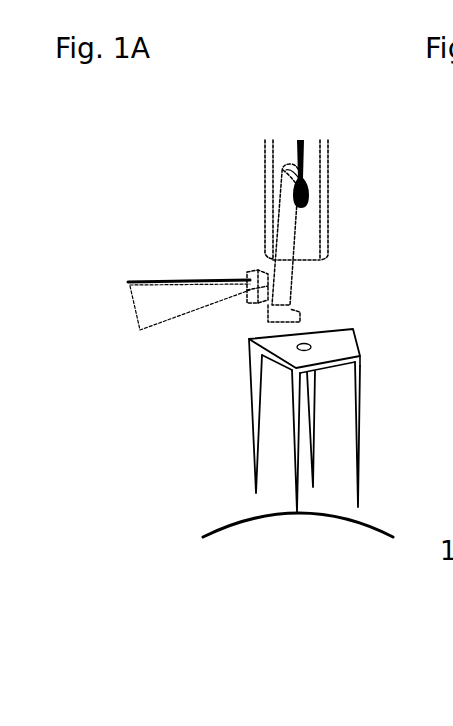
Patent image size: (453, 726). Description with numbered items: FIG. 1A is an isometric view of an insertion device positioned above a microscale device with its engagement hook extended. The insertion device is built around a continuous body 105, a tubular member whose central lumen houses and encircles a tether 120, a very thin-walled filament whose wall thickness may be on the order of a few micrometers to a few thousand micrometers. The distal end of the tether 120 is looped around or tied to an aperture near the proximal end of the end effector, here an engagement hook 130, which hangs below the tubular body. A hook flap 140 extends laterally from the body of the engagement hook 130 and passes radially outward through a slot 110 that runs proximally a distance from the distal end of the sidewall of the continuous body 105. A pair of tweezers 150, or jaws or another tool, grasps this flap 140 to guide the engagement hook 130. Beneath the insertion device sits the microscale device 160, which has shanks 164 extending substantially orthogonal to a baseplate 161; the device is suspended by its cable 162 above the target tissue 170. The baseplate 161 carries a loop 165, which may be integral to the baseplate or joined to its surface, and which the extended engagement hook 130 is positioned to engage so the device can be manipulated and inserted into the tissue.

The continuous body 105 is at (260, 199).
The slot 110 is at (277, 182).
The tether 120 is at (306, 140).
The engagement hook 130 is at (292, 288).
The hook flap 140 is at (248, 272).
The tweezers 150 is at (158, 274).
The microscale device 160 is at (243, 375).
The baseplate 161 is at (363, 360).
The cable 162 is at (360, 350).
The shanks 164 is at (250, 447).
The loop 165 is at (309, 345).
The target tissue 170 is at (218, 522).